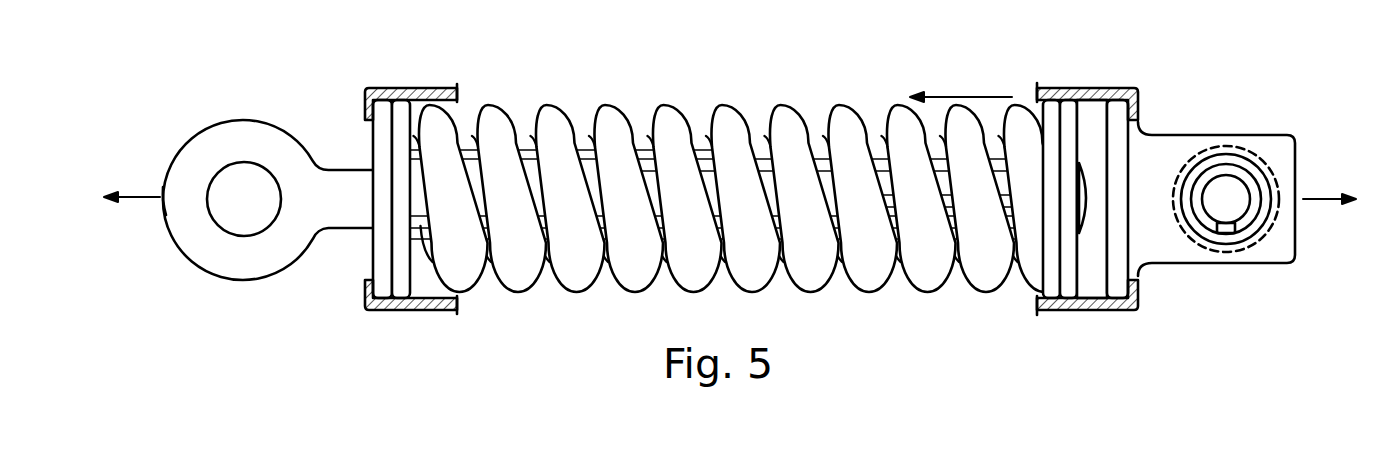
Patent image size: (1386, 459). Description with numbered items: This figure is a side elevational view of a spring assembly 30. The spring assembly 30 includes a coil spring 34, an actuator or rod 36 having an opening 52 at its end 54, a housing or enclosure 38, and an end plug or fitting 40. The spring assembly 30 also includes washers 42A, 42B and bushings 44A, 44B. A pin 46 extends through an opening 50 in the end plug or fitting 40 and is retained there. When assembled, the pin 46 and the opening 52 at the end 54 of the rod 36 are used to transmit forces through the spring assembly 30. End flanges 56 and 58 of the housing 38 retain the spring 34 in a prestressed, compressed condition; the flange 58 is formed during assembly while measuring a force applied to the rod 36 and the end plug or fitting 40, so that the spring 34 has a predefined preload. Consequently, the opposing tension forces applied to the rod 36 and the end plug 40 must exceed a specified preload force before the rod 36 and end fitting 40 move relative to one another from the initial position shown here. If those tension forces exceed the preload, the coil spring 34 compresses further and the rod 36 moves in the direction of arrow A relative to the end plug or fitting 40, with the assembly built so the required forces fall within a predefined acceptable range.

The spring assembly 30 is at (730, 189).
The coil spring 34 is at (743, 191).
The rod 36 is at (247, 205).
The housing 38 is at (450, 88).
The end plug or fitting 40 is at (1245, 198).
The washer 42A is at (372, 262).
The washer 42B is at (1070, 290).
The bushing 44A is at (528, 207).
The bushing 44B is at (945, 222).
The pin 46 is at (1268, 173).
The opening 50 is at (1215, 213).
The opening 52 is at (230, 225).
The end 54 is at (163, 187).
The end flange 56 is at (372, 163).
The end flange 58 is at (1134, 110).